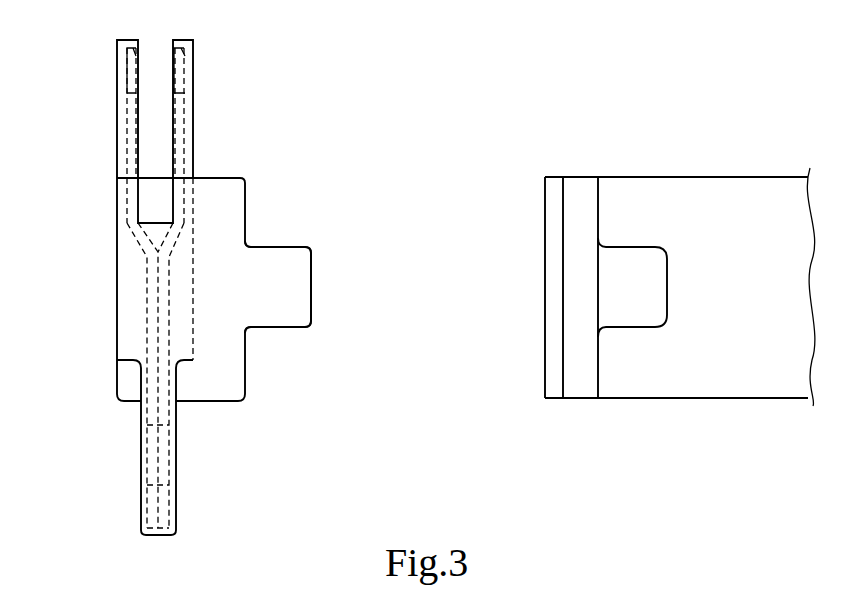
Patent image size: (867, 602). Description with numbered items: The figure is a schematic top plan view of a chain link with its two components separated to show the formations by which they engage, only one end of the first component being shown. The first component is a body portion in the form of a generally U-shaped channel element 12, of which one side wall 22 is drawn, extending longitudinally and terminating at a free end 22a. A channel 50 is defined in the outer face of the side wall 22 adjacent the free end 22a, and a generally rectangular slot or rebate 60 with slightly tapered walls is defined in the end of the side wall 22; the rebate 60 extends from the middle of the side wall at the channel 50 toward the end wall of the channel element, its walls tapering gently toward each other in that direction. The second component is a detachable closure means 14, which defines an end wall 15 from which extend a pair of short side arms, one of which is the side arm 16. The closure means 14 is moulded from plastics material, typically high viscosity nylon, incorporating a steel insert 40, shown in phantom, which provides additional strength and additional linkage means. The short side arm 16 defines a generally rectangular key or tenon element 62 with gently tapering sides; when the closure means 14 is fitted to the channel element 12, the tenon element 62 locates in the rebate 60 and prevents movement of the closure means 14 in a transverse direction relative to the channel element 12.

The U-shaped channel element 12 is at (763, 378).
The detachable closure means 14 is at (127, 337).
The end wall 15 is at (127, 262).
The short side arm 16 is at (226, 390).
The side wall 22 is at (731, 190).
The free end 22a is at (540, 280).
The steel insert 40 is at (177, 68).
The channel 50 is at (577, 212).
The rebate 60 is at (638, 310).
The tenon element 62 is at (299, 300).